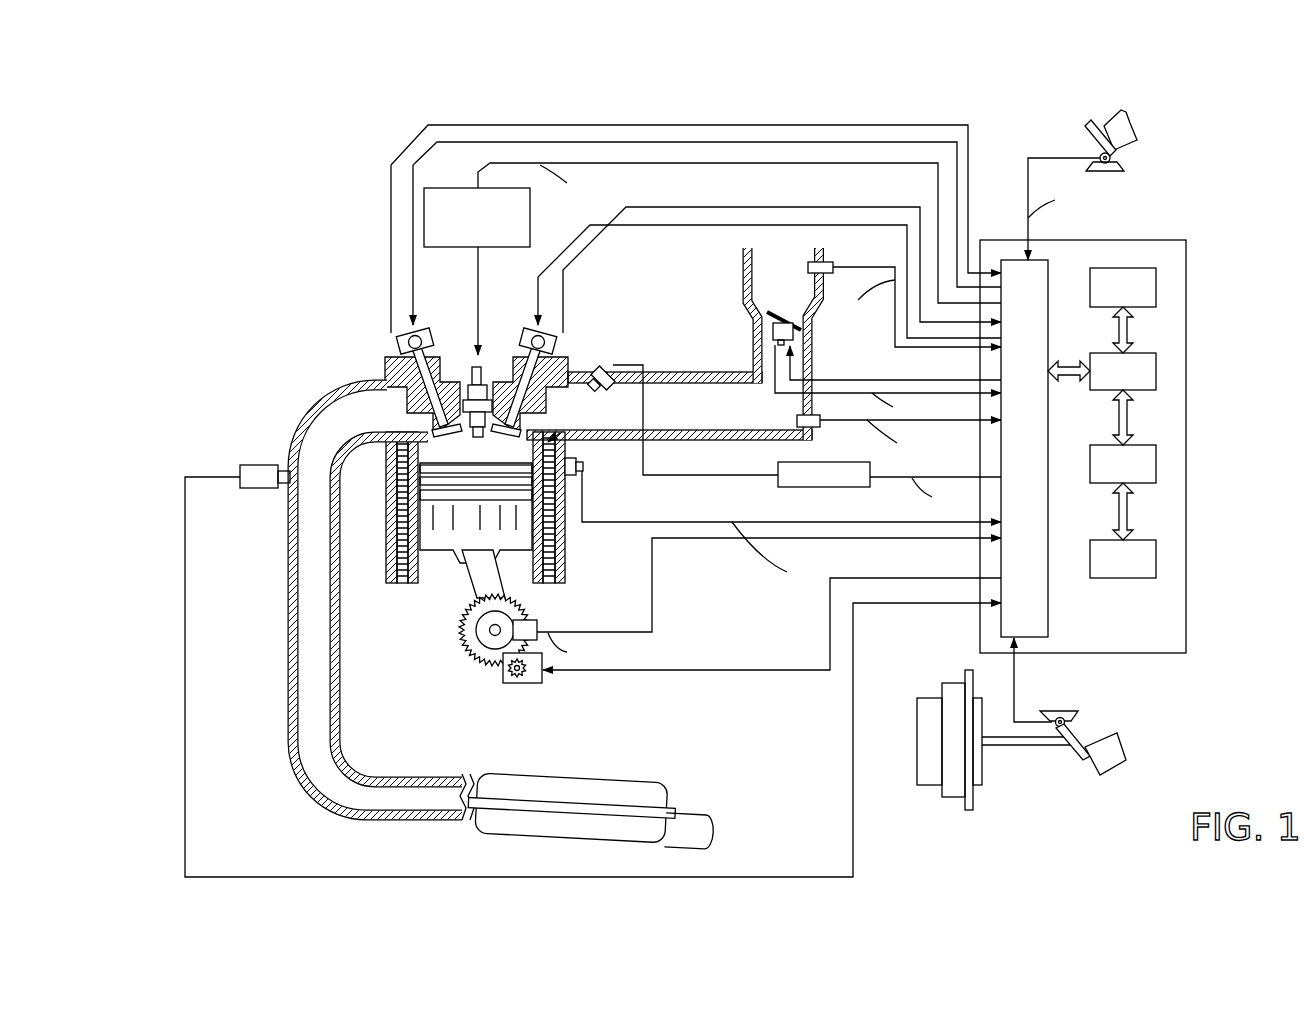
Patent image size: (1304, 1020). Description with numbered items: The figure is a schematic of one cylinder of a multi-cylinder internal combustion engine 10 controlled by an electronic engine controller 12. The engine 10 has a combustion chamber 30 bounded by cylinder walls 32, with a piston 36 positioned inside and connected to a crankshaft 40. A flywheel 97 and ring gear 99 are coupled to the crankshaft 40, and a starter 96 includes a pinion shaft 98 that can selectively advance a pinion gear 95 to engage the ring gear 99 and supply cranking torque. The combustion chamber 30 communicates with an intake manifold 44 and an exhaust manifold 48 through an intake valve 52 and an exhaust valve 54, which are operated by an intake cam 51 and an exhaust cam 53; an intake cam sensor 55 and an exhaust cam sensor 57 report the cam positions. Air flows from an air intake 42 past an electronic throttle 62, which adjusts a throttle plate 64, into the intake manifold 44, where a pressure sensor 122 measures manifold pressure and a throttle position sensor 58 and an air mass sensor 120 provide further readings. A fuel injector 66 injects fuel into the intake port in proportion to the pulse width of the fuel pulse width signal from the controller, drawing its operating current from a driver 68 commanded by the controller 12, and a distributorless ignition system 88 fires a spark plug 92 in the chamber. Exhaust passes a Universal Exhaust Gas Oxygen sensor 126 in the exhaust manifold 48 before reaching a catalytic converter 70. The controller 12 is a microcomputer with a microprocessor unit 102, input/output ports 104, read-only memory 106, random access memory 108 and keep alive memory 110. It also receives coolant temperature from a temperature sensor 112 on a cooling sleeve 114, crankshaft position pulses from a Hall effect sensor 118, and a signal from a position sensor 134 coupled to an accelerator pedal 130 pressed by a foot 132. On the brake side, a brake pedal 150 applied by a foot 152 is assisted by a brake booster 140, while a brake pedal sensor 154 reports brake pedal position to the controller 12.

The internal combustion engine 10 is at (326, 314).
The electronic engine controller 12 is at (1125, 430).
The combustion chamber 30 is at (392, 540).
The cylinder walls 32 is at (424, 575).
The piston 36 is at (462, 545).
The crankshaft 40 is at (475, 658).
The air intake 42 is at (772, 290).
The intake manifold 44 is at (713, 419).
The exhaust manifold 48 is at (344, 424).
The intake cam 51 is at (530, 325).
The intake valve 52 is at (516, 414).
The exhaust cam 53 is at (421, 327).
The exhaust valve 54 is at (437, 425).
The intake cam sensor 55 is at (553, 350).
The exhaust cam sensor 57 is at (398, 349).
The throttle position sensor 58 is at (853, 364).
The electronic throttle 62 is at (800, 328).
The throttle plate 64 is at (770, 318).
The fuel injector 66 is at (610, 364).
The driver 68 is at (794, 488).
The catalytic converter 70 is at (490, 773).
The distributorless ignition system 88 is at (432, 190).
The spark plug 92 is at (481, 366).
The pinion gear 95 is at (527, 687).
The starter 96 is at (752, 651).
The flywheel 97 is at (472, 626).
The pinion shaft 98 is at (483, 658).
The ring gear 99 is at (490, 667).
The microprocessor unit 102 is at (1156, 372).
The input/output ports 104 is at (1048, 262).
The read-only memory 106 is at (1156, 284).
The random access memory 108 is at (1156, 465).
The keep alive memory 110 is at (1156, 558).
The temperature sensor 112 is at (580, 474).
The cooling sleeve 114 is at (552, 540).
The Hall effect sensor 118 is at (540, 618).
The air mass sensor 120 is at (834, 262).
The pressure sensor 122 is at (823, 428).
The Universal Exhaust Gas Oxygen sensor 126 is at (240, 470).
The accelerator pedal 130 is at (1137, 174).
The foot 132 is at (1130, 118).
The position sensor 134 is at (1112, 160).
The brake booster 140 is at (917, 782).
The brake pedal 150 is at (1070, 715).
The foot 152 is at (1112, 735).
The brake pedal sensor 154 is at (1055, 719).